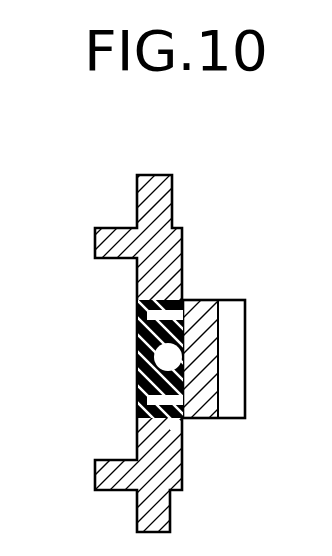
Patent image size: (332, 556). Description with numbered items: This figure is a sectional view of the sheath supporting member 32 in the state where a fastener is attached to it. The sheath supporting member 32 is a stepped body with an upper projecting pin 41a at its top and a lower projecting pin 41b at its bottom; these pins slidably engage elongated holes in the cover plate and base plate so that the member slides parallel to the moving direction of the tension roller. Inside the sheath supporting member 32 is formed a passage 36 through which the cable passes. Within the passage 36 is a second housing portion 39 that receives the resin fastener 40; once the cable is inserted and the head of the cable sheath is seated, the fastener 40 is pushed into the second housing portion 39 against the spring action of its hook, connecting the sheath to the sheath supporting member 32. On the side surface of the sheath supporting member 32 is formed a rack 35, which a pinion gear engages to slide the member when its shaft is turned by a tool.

The sheath supporting member 32 is at (172, 263).
The rack 35 is at (232, 358).
The passage 36 is at (150, 343).
The second housing portion 39 is at (137, 414).
The fastener 40 is at (168, 357).
The upper projecting pin 41a is at (153, 182).
The lower projecting pin 41b is at (160, 513).